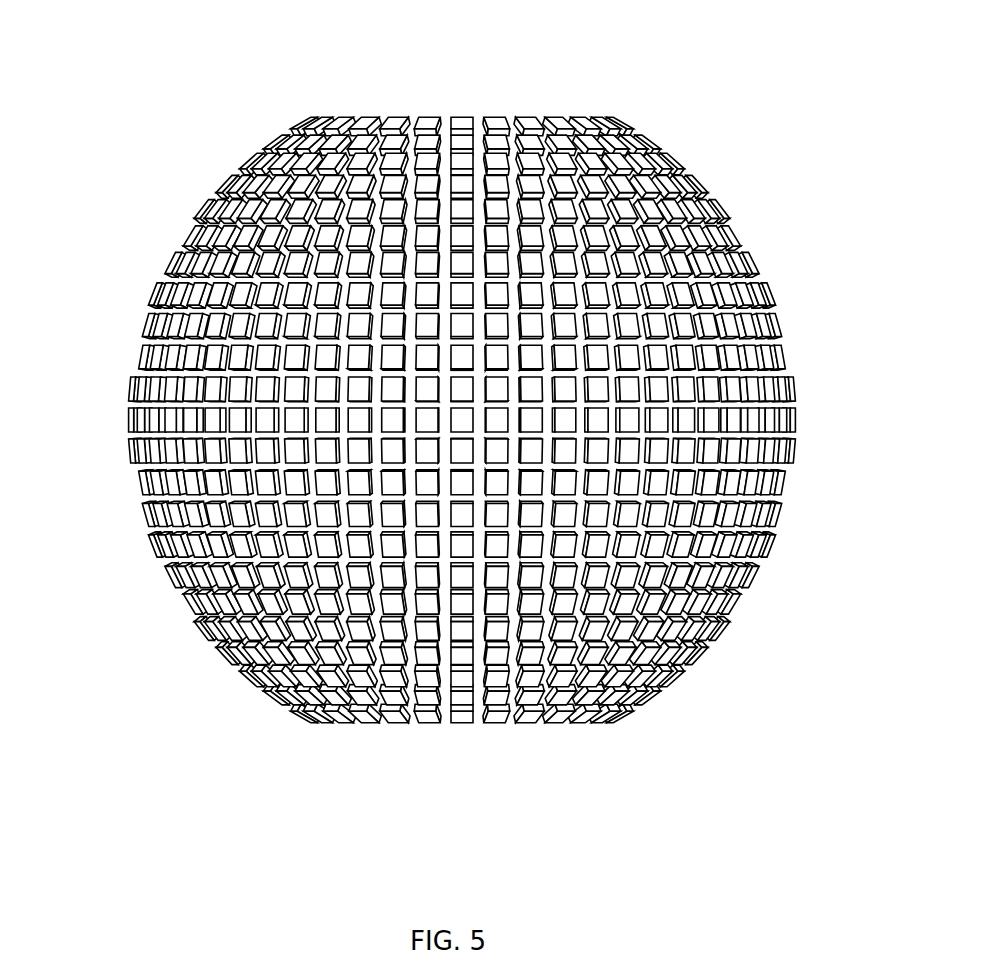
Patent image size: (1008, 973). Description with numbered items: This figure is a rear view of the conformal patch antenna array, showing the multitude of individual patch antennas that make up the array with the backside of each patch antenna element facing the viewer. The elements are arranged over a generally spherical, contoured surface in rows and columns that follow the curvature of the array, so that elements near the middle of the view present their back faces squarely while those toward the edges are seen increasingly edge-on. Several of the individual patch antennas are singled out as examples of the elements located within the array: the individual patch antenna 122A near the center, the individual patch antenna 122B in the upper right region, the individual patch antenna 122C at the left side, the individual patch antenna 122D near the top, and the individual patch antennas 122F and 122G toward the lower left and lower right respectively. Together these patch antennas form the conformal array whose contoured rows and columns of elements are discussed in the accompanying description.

The individual patch antenna 122A is at (458, 421).
The individual patch antenna 122B is at (610, 236).
The individual patch antenna 122C is at (164, 581).
The individual patch antenna 122D is at (498, 117).
The individual patch antenna 122F is at (289, 721).
The individual patch antenna 122G is at (631, 722).